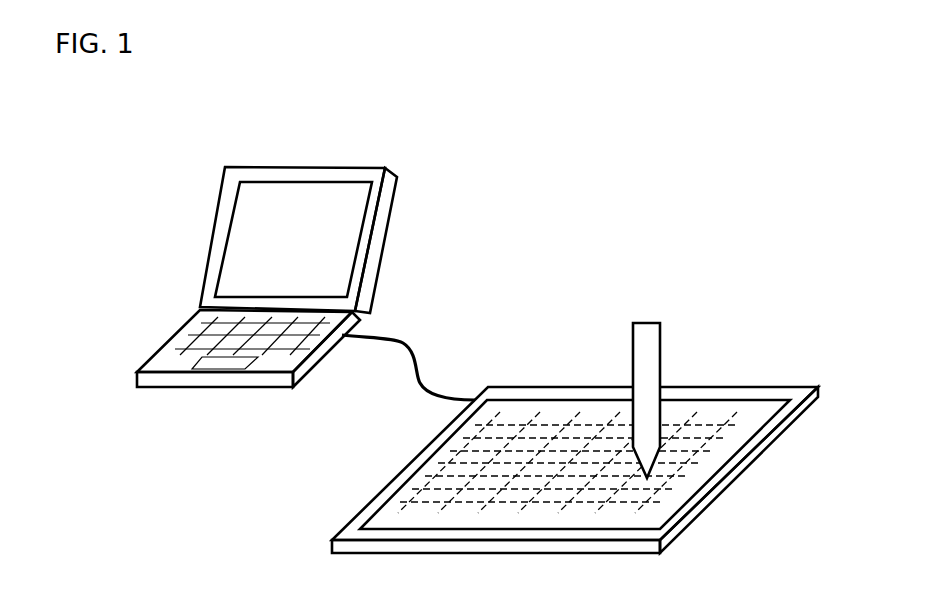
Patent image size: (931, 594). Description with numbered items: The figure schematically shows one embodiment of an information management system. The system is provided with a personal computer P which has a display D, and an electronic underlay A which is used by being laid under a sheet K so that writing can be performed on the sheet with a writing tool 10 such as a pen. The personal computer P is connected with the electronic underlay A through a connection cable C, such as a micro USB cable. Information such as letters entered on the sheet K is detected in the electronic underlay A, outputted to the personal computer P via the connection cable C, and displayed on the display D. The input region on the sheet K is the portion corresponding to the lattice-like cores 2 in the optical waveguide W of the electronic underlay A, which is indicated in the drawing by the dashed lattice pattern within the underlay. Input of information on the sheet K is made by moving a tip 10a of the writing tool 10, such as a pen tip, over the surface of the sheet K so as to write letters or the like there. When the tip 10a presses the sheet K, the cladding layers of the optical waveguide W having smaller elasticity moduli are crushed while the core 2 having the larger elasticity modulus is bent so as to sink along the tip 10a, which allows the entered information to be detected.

The personal computer P is at (184, 319).
The display D is at (253, 222).
The connection cable C is at (408, 362).
The sheet K is at (763, 412).
The electronic underlay A is at (726, 381).
The optical waveguide W is at (517, 415).
The cores 2 is at (520, 432).
The writing tool 10 is at (645, 330).
The tip 10a is at (653, 464).